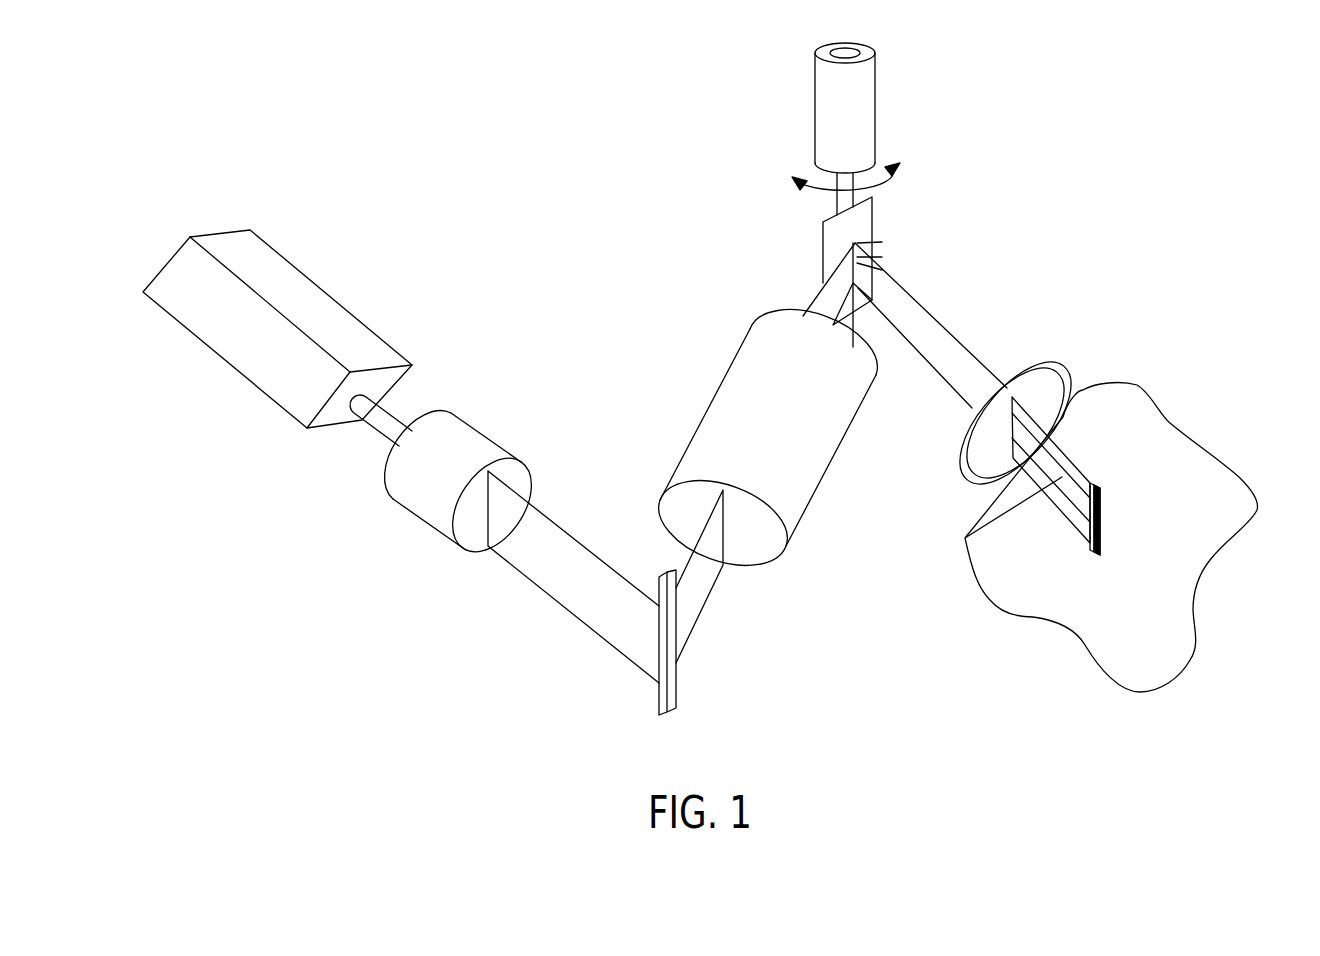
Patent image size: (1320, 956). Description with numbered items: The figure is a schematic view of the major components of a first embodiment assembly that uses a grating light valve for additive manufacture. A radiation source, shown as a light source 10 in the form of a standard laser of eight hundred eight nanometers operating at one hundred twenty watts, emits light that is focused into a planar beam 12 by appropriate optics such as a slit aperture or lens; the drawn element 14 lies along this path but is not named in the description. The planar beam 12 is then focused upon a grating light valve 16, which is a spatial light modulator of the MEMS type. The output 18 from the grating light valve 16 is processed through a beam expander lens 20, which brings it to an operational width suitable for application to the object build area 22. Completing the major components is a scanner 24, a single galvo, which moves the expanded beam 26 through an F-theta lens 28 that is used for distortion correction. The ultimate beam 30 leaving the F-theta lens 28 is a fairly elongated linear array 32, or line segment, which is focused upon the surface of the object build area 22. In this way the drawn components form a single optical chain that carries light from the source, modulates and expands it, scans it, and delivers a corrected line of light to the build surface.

The light source 10 is at (245, 358).
The planar beam 12 is at (580, 557).
The beam expander 14 is at (487, 440).
The grating light valve 16 is at (678, 700).
The output 18 is at (693, 595).
The beam expander lens 20 is at (810, 482).
The object build area 22 is at (1190, 558).
The scanner 24 is at (912, 172).
The expanded beam 26 is at (818, 307).
The F-theta lens 28 is at (980, 442).
The ultimate beam 30 is at (1073, 477).
The linear array 32 is at (1100, 487).